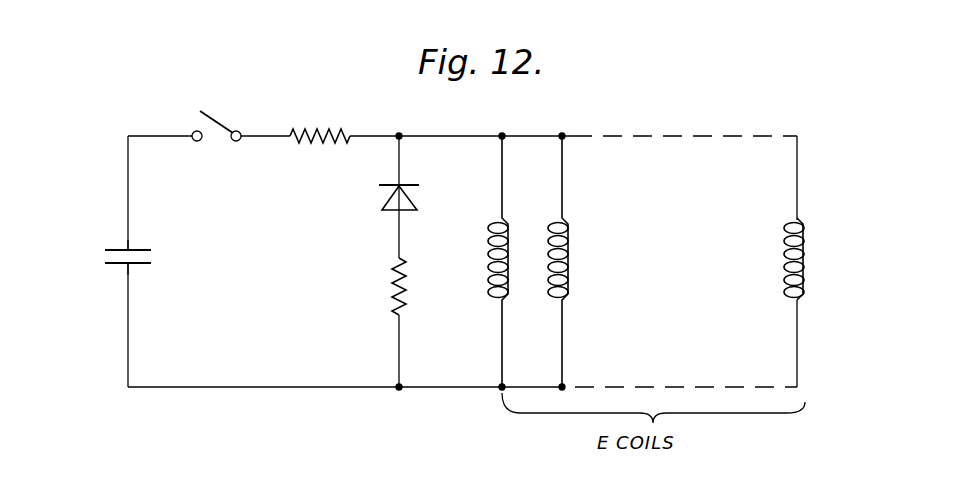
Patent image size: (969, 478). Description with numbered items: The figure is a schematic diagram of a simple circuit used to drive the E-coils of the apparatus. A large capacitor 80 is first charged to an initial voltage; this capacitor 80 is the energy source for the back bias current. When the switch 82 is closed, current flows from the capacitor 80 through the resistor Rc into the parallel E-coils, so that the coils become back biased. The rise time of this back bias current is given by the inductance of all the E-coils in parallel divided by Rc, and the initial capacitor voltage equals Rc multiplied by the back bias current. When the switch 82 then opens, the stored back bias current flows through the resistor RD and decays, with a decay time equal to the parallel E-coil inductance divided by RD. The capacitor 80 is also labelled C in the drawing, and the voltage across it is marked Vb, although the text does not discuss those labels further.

The capacitor 80 is at (117, 267).
The switch 82 is at (219, 122).
The capacitor C is at (113, 279).
The resistor R_c Rc is at (320, 125).
The resistor R_D RD is at (381, 286).
The battery voltage Vb is at (162, 257).